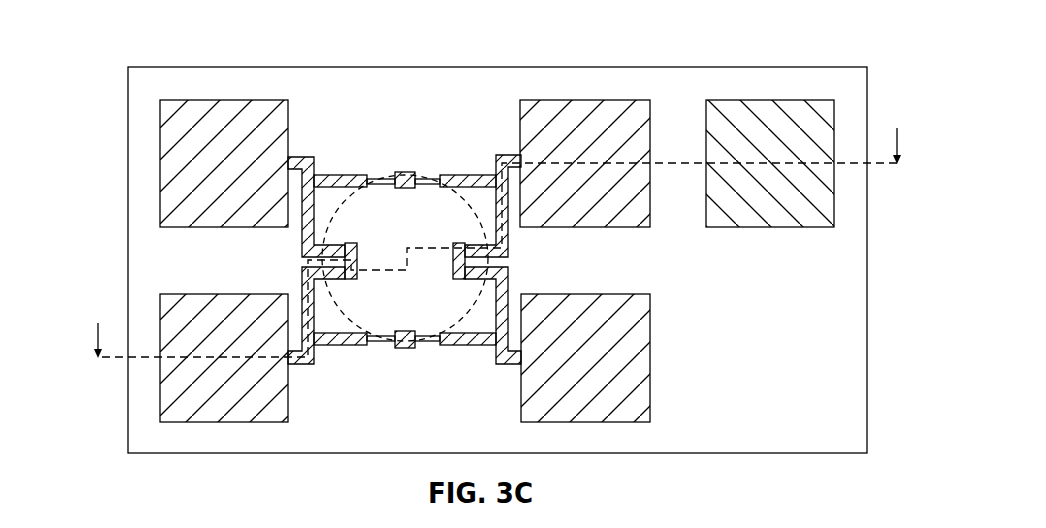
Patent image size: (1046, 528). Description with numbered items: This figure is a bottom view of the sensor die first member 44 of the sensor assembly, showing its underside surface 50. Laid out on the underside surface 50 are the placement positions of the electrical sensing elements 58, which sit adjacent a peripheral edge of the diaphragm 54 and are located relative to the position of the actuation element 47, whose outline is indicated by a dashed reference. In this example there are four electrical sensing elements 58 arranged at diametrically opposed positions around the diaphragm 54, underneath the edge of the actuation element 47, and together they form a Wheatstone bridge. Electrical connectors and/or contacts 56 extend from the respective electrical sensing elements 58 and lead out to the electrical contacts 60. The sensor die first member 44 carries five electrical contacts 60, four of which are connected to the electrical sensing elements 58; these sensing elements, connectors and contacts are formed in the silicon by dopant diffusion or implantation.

The sensor die first member 44 is at (754, 47).
The actuation element 47 is at (308, 261).
The underside surface 50 is at (836, 292).
The diaphragm 54 is at (478, 318).
The electrical connectors and/or contacts 56 is at (408, 175).
The electrical sensing elements 58 is at (383, 177).
The electrical contacts 60 is at (177, 164).